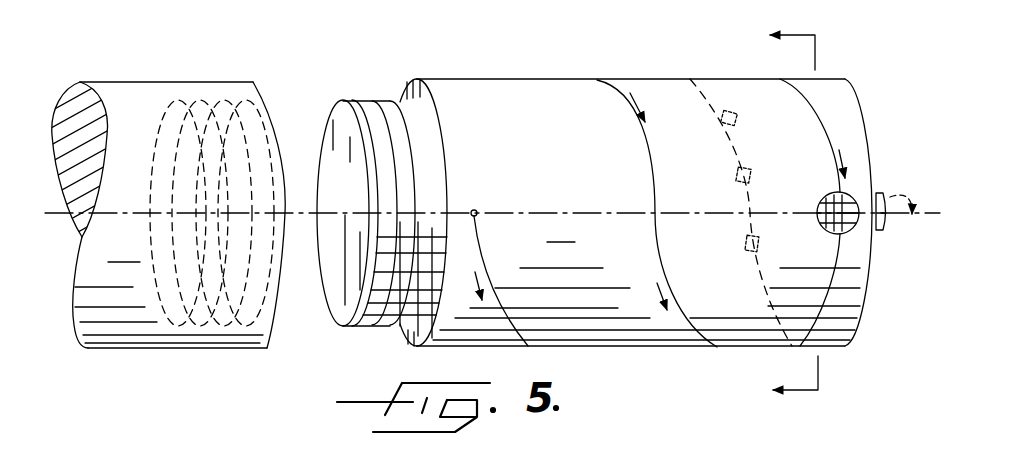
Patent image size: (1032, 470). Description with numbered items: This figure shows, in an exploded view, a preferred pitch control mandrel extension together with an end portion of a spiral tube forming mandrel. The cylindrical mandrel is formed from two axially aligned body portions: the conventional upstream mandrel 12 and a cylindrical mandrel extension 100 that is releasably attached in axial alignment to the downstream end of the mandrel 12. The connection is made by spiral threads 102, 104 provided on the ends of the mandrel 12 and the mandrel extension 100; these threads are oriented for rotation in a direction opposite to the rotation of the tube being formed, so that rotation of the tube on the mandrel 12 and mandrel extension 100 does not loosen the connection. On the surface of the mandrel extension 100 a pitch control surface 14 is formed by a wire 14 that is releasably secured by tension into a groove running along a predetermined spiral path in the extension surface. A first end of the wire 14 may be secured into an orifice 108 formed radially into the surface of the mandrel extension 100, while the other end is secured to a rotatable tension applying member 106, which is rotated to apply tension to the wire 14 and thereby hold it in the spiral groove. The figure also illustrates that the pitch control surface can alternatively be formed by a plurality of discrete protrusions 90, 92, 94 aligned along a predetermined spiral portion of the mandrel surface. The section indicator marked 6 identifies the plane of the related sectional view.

The mandrel 12 is at (158, 93).
The spiral thread 104 is at (252, 110).
The spiral thread 102 is at (392, 106).
The cylindrical mandrel extension 100 is at (484, 72).
The pitch control surface 14 is at (622, 95).
The orifice 108 is at (481, 204).
The protrusion 90 is at (722, 117).
The protrusion 92 is at (736, 172).
The protrusion 94 is at (746, 242).
The tension applying member 106 is at (878, 200).
The section line 6- 6 is at (807, 212).